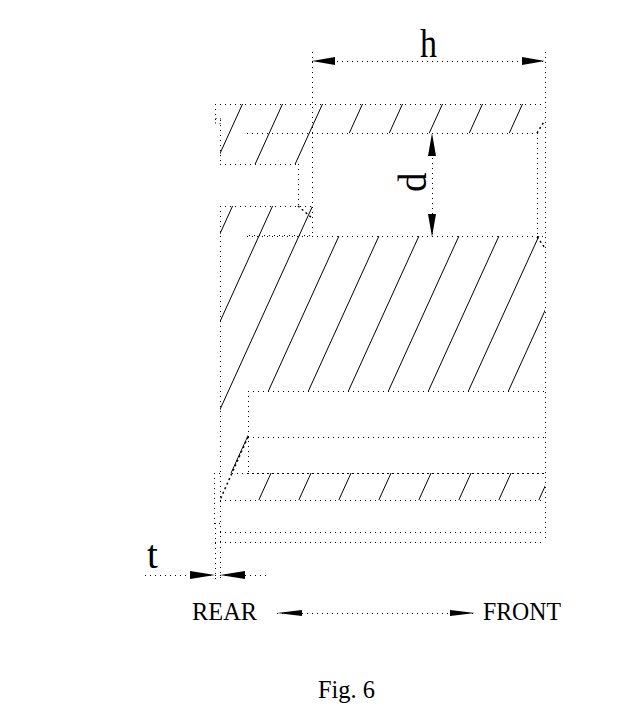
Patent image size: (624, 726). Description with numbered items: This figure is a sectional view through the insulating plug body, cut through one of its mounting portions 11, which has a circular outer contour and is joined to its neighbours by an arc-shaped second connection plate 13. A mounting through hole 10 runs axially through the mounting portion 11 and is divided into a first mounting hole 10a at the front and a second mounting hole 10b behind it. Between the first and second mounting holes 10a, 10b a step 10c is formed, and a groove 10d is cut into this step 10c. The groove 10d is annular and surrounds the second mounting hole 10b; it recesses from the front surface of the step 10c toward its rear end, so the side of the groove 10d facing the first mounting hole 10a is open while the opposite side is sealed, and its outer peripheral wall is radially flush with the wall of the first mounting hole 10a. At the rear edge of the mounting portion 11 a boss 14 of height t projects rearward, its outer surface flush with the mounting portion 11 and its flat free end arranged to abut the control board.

The mounting through hole 10 is at (98, 135).
The first mounting hole 10a is at (343, 188).
The second mounting hole 10b is at (246, 180).
The step 10c is at (262, 153).
The groove 10d is at (297, 235).
The mounting portion 11 is at (298, 116).
The second connection plate 13 is at (523, 490).
The boss 14 is at (218, 500).